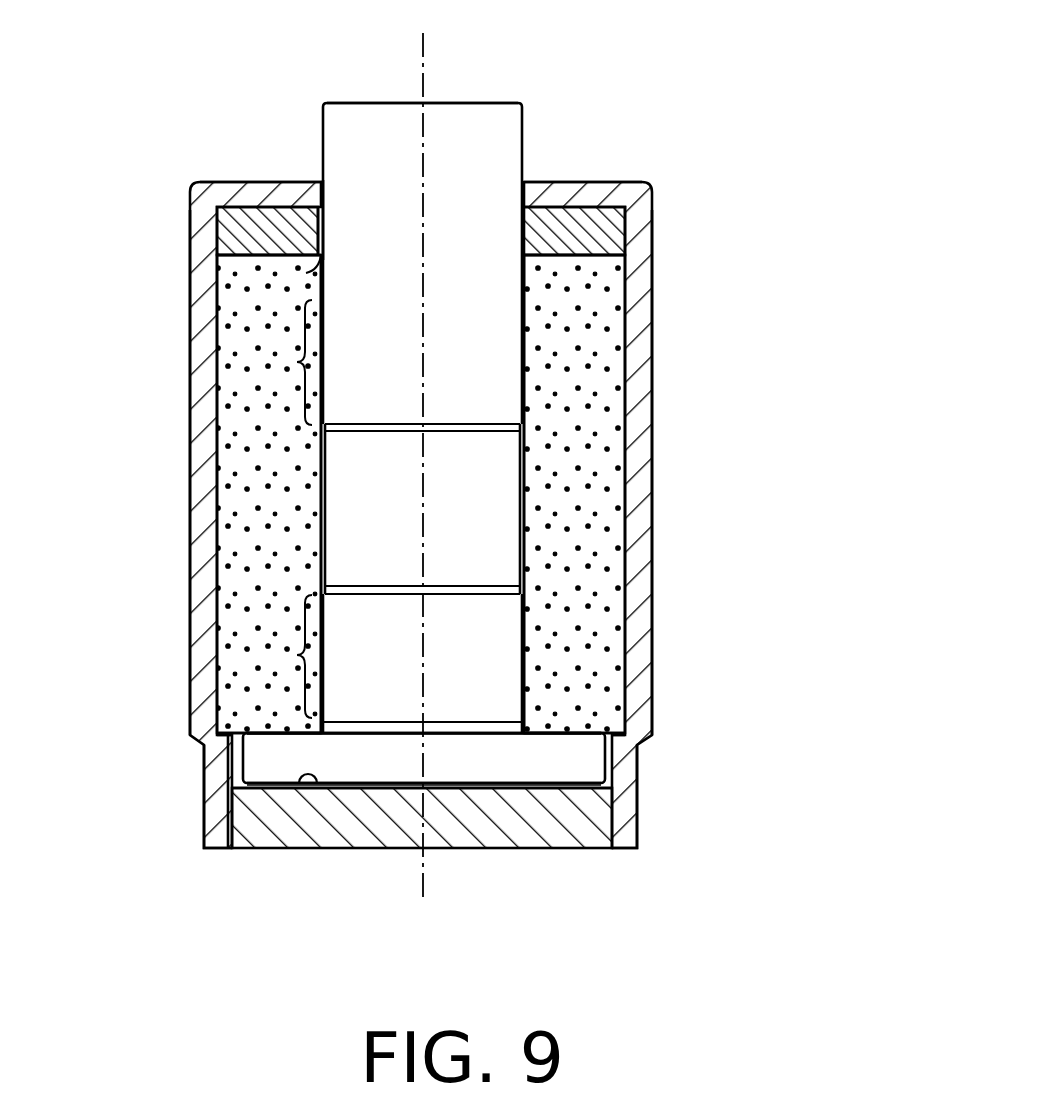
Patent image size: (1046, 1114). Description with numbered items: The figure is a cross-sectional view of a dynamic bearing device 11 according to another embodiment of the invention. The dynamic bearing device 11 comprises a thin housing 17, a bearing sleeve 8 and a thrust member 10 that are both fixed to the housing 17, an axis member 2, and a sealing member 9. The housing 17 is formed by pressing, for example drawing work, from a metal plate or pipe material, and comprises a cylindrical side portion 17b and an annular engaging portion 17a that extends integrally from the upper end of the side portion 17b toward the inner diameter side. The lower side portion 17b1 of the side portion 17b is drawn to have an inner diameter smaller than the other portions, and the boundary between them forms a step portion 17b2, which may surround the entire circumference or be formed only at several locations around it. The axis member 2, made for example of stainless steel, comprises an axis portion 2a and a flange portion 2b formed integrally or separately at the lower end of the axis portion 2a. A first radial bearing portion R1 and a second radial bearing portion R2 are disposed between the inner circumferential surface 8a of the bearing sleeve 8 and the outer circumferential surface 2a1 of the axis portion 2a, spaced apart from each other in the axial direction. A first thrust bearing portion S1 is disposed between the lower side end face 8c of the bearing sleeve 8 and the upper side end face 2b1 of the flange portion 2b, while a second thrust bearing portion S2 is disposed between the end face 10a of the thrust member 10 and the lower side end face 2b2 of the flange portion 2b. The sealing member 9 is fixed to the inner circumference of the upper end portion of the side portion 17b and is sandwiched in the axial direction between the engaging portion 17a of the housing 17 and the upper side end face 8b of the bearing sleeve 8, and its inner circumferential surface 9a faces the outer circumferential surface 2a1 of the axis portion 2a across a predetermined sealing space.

The axis member 2 is at (548, 135).
The axis portion 2a is at (468, 122).
The outer circumferential surface of the axis portion 2a1 is at (297, 207).
The flange portion 2b is at (590, 772).
The upper side end face of the flange portion 2b1 is at (572, 733).
The lower side end face of the flange portion 2b2 is at (614, 813).
The bearing sleeve 8 is at (612, 290).
The inner circumferential surface of the bearing sleeve 8a is at (515, 340).
The upper side end face of the bearing sleeve 8b is at (625, 217).
The lower side end face of the bearing sleeve 8c is at (232, 744).
The sealing member 9 is at (560, 198).
The inner circumferential surface of the sealing member 9a is at (320, 231).
The thrust member 10 is at (502, 848).
The end face of the thrust member 10a is at (305, 848).
The dynamic bearing device 11 is at (684, 160).
The housing 17 is at (182, 197).
The engaging portion 17a is at (245, 190).
The side portion 17b is at (197, 334).
The lower side portion 17b1 is at (216, 799).
The step portion 17b2 is at (630, 738).
The first radial bearing portion R1 is at (282, 365).
The second radial bearing portion R2 is at (280, 650).
The first thrust bearing portion S1 is at (280, 735).
The second thrust bearing portion S2 is at (256, 848).